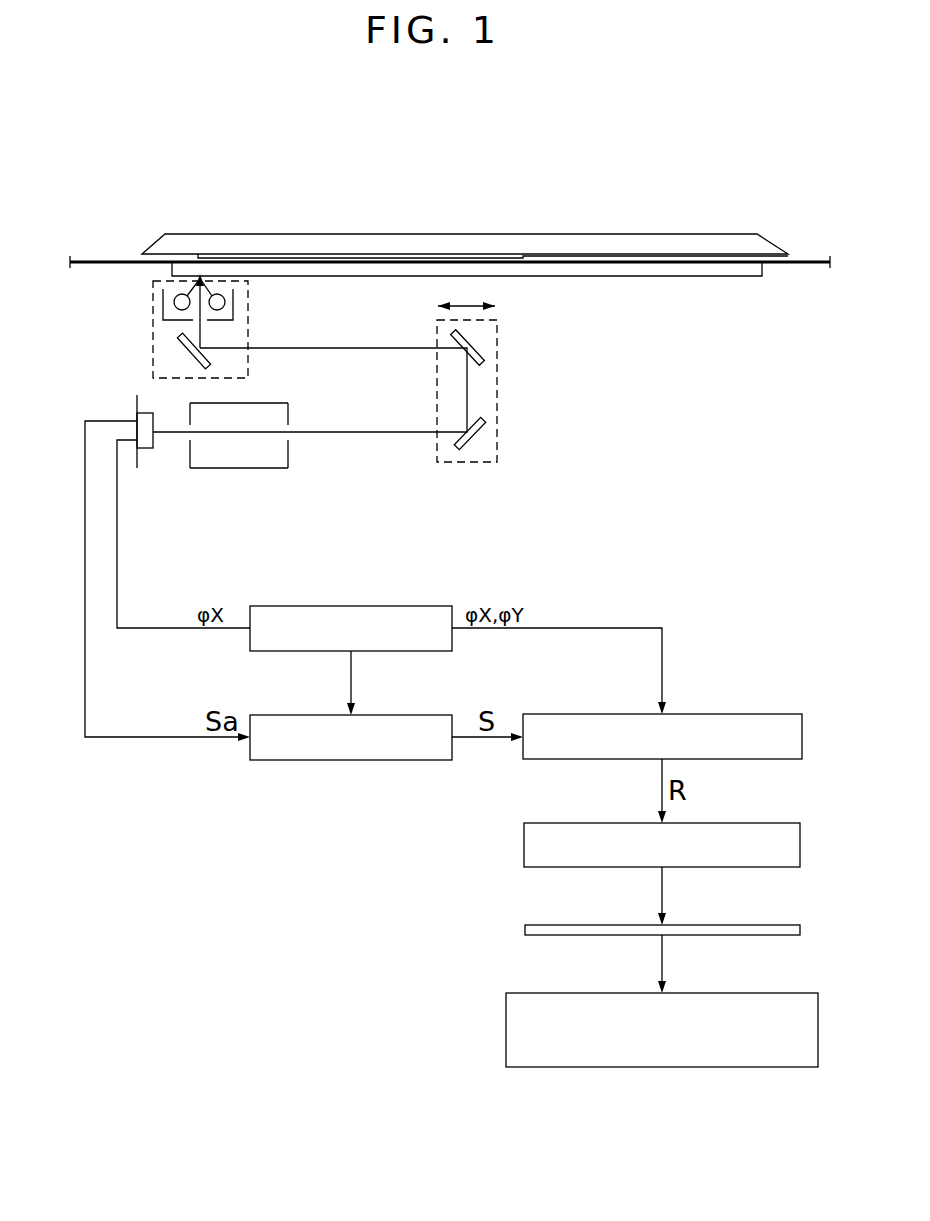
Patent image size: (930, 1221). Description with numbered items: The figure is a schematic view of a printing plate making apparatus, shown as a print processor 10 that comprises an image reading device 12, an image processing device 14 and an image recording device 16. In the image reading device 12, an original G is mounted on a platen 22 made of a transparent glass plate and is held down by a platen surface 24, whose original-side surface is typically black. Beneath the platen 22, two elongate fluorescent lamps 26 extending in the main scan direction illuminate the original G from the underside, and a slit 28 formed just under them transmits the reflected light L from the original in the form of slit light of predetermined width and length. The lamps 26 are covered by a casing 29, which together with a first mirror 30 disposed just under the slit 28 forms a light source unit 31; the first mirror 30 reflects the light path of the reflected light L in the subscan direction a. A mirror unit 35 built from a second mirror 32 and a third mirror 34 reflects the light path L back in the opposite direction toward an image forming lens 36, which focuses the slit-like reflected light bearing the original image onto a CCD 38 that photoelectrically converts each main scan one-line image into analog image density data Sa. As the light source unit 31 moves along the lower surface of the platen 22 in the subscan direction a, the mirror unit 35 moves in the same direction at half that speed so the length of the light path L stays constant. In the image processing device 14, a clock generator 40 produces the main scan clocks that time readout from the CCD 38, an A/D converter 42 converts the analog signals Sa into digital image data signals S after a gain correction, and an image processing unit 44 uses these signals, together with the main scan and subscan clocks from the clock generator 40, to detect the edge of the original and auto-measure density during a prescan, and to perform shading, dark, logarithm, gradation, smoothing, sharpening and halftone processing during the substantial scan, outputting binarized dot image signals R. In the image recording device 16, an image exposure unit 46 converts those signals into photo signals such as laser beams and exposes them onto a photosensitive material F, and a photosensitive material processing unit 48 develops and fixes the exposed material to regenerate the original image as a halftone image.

The print processor 10 is at (231, 212).
The image reading device 12 is at (666, 360).
The image processing device 14 is at (824, 696).
The image recording device 16 is at (824, 882).
The platen 22 is at (627, 272).
The platen surface 24 is at (312, 240).
The fluorescent lamps 26 is at (209, 306).
The slit 28 is at (209, 327).
The casing 29 is at (233, 311).
The first mirror 30 is at (190, 353).
The light source unit 31 is at (153, 338).
The second mirror 32 is at (483, 347).
The third mirror 34 is at (480, 437).
The mirror unit 35 is at (497, 385).
The image forming lens 36 is at (257, 460).
The CCD 38 is at (147, 450).
The clock generator 40 is at (360, 606).
The A/D converter 42 is at (351, 762).
The image processing unit 44 is at (615, 712).
The image exposure unit 46 is at (524, 843).
The photosensitive material processing unit 48 is at (506, 1016).
The original G is at (397, 253).
The subscan direction a is at (473, 300).
The reflected light L is at (387, 350).
The photosensitive material F is at (525, 929).